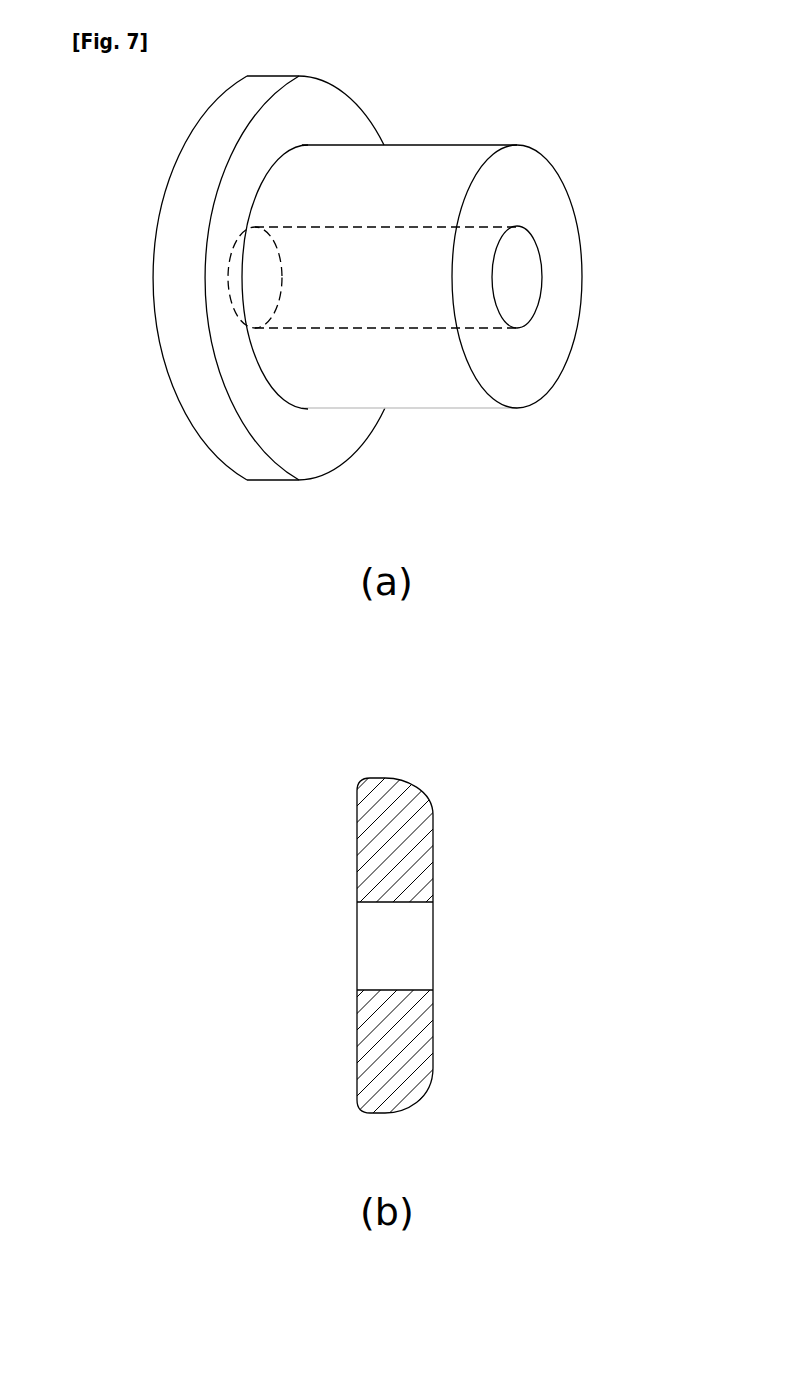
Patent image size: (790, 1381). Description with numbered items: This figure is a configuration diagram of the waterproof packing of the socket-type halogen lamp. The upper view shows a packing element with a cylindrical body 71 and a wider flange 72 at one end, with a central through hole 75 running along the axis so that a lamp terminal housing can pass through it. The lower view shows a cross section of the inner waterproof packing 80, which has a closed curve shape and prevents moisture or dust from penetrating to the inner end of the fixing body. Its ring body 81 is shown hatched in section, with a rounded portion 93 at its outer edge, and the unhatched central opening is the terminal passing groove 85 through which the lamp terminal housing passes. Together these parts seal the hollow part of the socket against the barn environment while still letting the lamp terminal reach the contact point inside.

The cylindrical body 71 is at (538, 367).
The flange 72 is at (197, 185).
The through hole 75 is at (506, 268).
The inner waterproof packing 80 is at (398, 942).
The ring body 81 is at (357, 858).
The terminal passing groove 85 is at (389, 943).
The rounded portion 93 is at (420, 793).